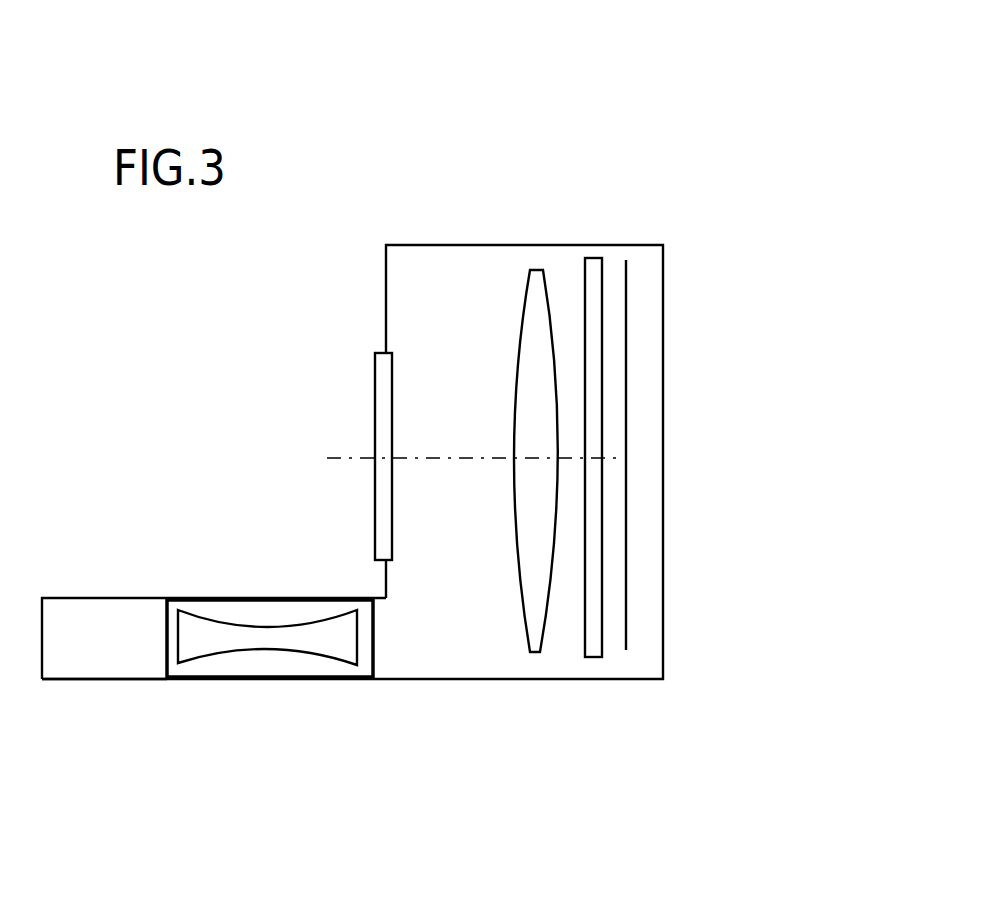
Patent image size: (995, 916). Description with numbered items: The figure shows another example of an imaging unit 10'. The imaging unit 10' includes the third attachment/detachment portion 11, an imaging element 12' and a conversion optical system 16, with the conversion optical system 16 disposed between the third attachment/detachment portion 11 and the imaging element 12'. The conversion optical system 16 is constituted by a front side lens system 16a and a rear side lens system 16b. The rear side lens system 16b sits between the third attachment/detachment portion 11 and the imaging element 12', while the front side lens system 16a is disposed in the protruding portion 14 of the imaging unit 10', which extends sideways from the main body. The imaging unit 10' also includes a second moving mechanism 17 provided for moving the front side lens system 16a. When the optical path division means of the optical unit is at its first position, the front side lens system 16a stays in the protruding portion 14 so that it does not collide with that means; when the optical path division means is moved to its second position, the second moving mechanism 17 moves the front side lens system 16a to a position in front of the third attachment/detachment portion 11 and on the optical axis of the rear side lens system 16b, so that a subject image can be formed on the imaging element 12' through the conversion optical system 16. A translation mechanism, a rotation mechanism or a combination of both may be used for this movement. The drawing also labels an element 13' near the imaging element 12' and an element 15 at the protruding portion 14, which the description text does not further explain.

The imaging unit 10' is at (425, 349).
The third attachment/detachment portion 11 is at (377, 402).
The imaging element 12' is at (712, 455).
The filter 13' is at (585, 558).
The protruding portion 14 is at (62, 648).
The lens barrel 15 is at (75, 597).
The conversion optical system 16 is at (541, 818).
The front side lens system 16a is at (292, 635).
The rear side lens system 16b is at (530, 640).
The second moving mechanism 17 is at (167, 670).